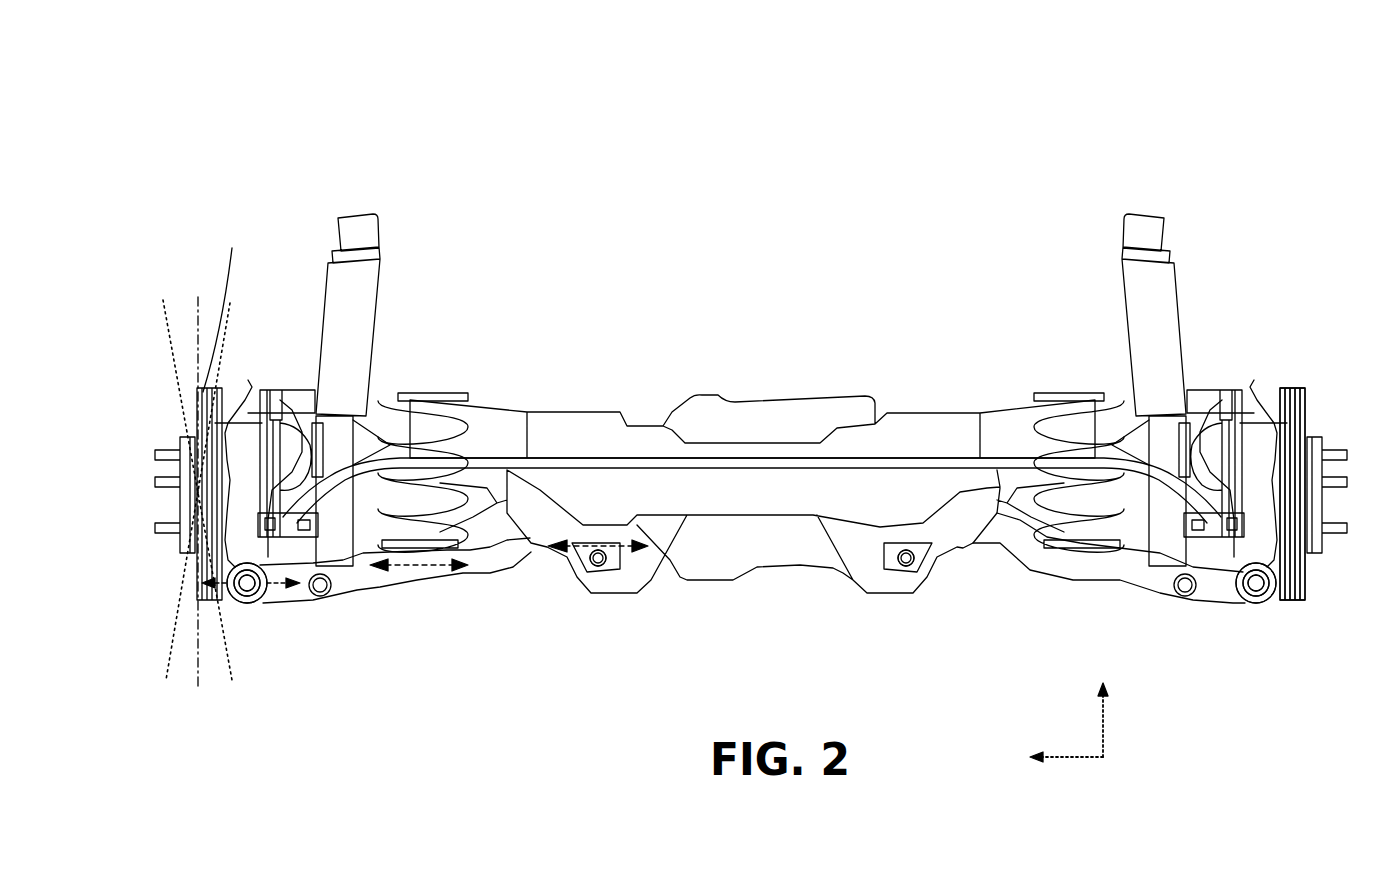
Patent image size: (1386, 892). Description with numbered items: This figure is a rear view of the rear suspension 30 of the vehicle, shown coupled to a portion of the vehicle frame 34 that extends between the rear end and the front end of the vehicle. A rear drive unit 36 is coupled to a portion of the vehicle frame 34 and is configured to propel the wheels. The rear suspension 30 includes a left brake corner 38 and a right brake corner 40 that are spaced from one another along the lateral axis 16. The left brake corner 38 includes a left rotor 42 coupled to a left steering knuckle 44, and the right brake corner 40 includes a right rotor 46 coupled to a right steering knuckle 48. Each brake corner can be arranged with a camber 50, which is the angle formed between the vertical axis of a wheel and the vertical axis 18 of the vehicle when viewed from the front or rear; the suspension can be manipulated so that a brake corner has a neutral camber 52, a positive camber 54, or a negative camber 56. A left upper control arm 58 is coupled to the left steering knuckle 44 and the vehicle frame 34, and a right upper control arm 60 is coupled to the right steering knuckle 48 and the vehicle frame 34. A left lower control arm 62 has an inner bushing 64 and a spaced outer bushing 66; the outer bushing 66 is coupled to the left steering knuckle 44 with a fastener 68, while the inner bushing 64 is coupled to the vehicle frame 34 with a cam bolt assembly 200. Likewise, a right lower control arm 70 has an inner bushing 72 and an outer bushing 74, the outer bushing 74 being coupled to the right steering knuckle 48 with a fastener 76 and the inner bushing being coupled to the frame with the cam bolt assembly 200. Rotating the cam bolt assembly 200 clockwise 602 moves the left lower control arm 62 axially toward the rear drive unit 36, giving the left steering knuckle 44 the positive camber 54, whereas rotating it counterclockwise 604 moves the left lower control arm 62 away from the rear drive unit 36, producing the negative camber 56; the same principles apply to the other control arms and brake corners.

The lateral axis 16 is at (1068, 758).
The vertical axis 18 is at (1110, 730).
The rear suspension 30 is at (302, 132).
The vehicle frame 34 is at (764, 500).
The rear drive unit 36 is at (770, 410).
The left brake corner 38 is at (151, 292).
The right brake corner 40 is at (1312, 307).
The left rotor 42 is at (222, 309).
The left steering knuckle 44 is at (233, 420).
The right rotor 46 is at (1297, 387).
The right steering knuckle 48 is at (1250, 427).
The camber 50 is at (161, 252).
The neutral camber 52 is at (198, 312).
The positive camber 54 is at (172, 357).
The negative camber 56 is at (237, 312).
The left upper control arm 58 is at (365, 447).
The right upper control arm 60 is at (1130, 447).
The left lower control arm 62 is at (357, 583).
The inner bushing 64 is at (604, 578).
The outer bushing 66 is at (247, 610).
The fastener 68 is at (256, 588).
The right lower control arm 70 is at (1085, 567).
The inner bushing 72 is at (904, 578).
The outer bushing 74 is at (1260, 604).
The fastener 76 is at (1252, 590).
The cam bolt assembly 200 is at (606, 556).
The clockwise rotation 602 is at (623, 540).
The counterclockwise rotation 604 is at (583, 543).